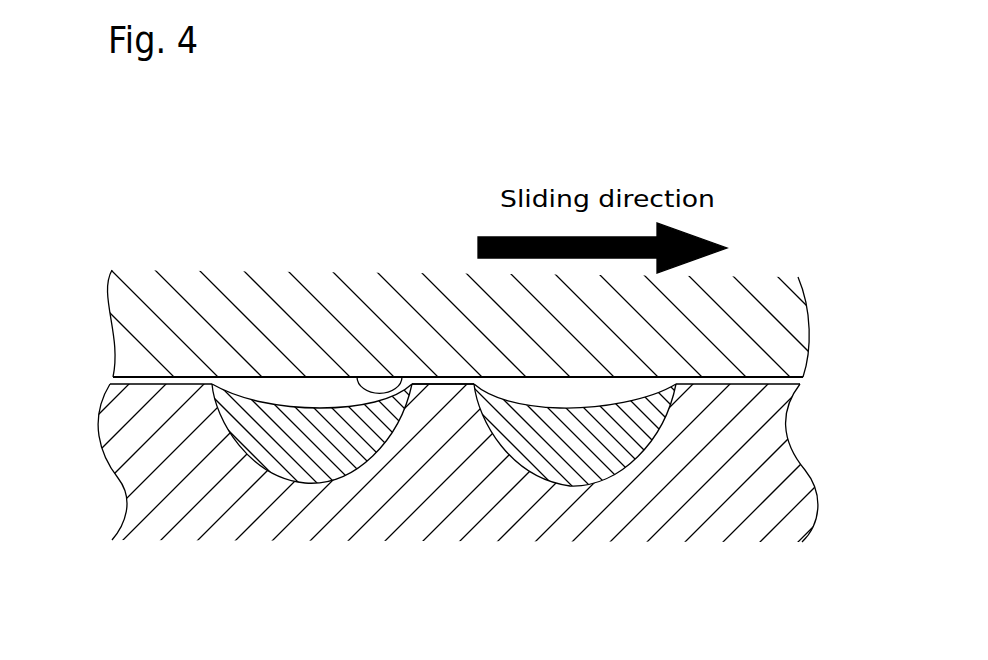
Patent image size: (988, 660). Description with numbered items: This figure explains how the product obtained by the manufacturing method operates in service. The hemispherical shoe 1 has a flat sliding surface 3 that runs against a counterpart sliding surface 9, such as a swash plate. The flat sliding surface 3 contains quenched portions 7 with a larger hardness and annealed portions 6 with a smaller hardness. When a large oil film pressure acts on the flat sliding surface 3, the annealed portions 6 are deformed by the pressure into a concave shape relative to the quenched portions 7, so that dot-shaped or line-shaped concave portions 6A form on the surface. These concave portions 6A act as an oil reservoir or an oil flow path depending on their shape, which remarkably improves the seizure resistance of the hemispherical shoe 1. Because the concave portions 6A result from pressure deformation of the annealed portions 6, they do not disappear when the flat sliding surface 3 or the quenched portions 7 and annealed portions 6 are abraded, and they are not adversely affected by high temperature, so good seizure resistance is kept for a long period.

The hemispherical shoe 1 is at (104, 466).
The flat sliding surface 3 is at (154, 375).
The annealed portions 6 is at (303, 455).
The concave portions 6A is at (305, 410).
The quenched portions 7 is at (444, 393).
The counterpart sliding surface 9 is at (393, 374).